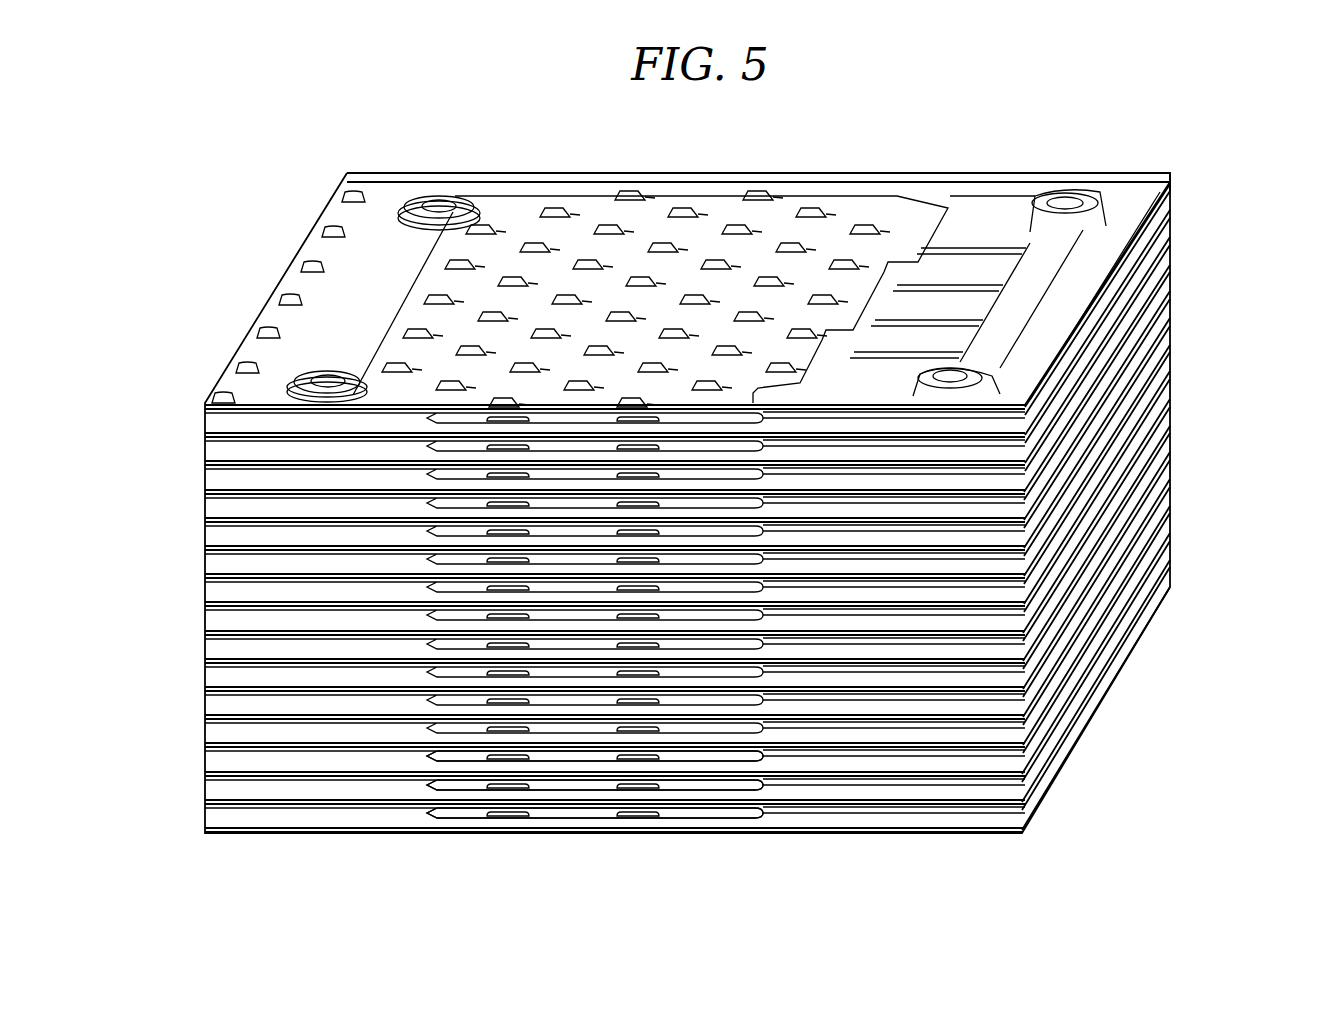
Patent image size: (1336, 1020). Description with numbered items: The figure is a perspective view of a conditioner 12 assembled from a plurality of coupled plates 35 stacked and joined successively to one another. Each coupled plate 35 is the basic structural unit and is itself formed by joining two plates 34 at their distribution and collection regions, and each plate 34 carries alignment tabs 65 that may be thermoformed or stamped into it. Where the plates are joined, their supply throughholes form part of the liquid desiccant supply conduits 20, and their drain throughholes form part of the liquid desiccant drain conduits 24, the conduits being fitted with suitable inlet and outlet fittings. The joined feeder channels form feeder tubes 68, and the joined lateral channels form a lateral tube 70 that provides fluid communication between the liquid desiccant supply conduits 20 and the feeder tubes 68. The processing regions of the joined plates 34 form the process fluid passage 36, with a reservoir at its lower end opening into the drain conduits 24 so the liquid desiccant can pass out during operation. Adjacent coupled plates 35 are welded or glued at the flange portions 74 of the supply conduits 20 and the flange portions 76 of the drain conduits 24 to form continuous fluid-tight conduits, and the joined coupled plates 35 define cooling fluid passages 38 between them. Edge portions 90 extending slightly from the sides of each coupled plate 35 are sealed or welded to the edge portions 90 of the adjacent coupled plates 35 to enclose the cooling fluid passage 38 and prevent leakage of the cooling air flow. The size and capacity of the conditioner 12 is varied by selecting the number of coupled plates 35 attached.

The conditioner 12 is at (1273, 168).
The liquid desiccant supply conduit 20 is at (1065, 193).
The liquid desiccant drain conduit 24 is at (440, 200).
The plate 34 is at (1140, 207).
The coupled plate 35 is at (1132, 268).
The process fluid passage 36 is at (688, 752).
The cooling fluid passage 38 is at (1137, 540).
The alignment tab 65 is at (348, 192).
The feeder tube 68 is at (985, 275).
The lateral tube 70 is at (1030, 240).
The flange portion of liquid desiccant supply conduit 74 is at (1102, 195).
The flange portion of liquid desiccant drain conduit 76 is at (425, 200).
The edge portion 90 is at (225, 447).